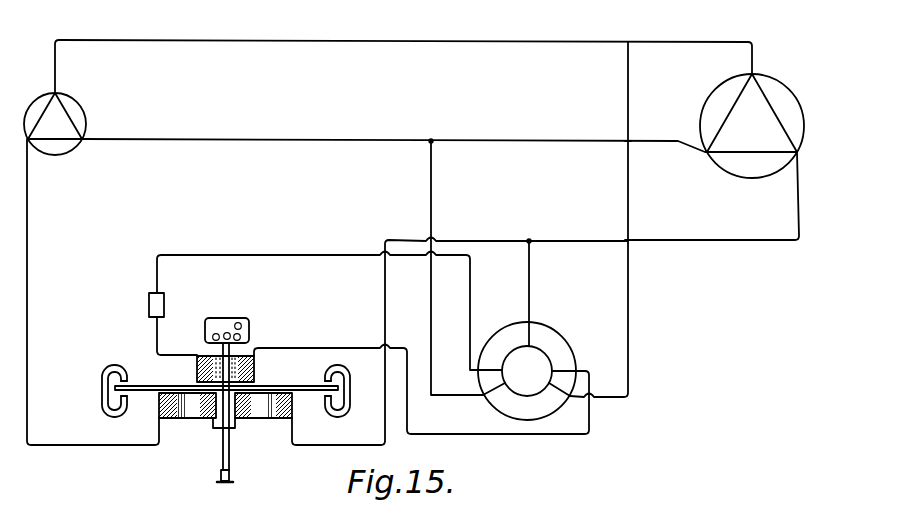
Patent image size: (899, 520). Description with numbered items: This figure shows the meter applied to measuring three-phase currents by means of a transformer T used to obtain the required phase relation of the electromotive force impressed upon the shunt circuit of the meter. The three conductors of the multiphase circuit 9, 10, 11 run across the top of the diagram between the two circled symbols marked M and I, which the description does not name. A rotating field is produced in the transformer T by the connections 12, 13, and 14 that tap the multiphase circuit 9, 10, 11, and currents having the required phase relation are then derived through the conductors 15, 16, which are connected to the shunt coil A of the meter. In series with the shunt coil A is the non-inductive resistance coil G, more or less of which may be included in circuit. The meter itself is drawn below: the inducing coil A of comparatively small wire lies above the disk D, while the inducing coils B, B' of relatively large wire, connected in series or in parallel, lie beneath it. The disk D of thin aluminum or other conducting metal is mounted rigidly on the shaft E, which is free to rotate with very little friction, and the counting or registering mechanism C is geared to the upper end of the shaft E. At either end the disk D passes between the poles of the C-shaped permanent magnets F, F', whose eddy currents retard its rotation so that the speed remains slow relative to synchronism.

The multiphase circuit conductor 9 is at (670, 242).
The multiphase circuit conductor 10 is at (514, 141).
The multiphase circuit conductor 11 is at (422, 42).
The transformer connection 12 is at (530, 272).
The transformer connection 13 is at (432, 200).
The transformer connection 14 is at (630, 322).
The shunt conductor 15 is at (275, 256).
The shunt conductor 16 is at (304, 348).
The motor M is at (56, 118).
The pump I is at (752, 120).
The transformer T is at (527, 369).
The non-inductive resistance coil G is at (149, 305).
The registering mechanism C is at (222, 318).
The inducing coil A is at (197, 370).
The inducing coil B is at (176, 405).
The inducing coil B' is at (273, 405).
The disk D is at (292, 386).
The shaft E is at (236, 447).
The permanent magnet F is at (110, 380).
The permanent magnet F' is at (346, 391).